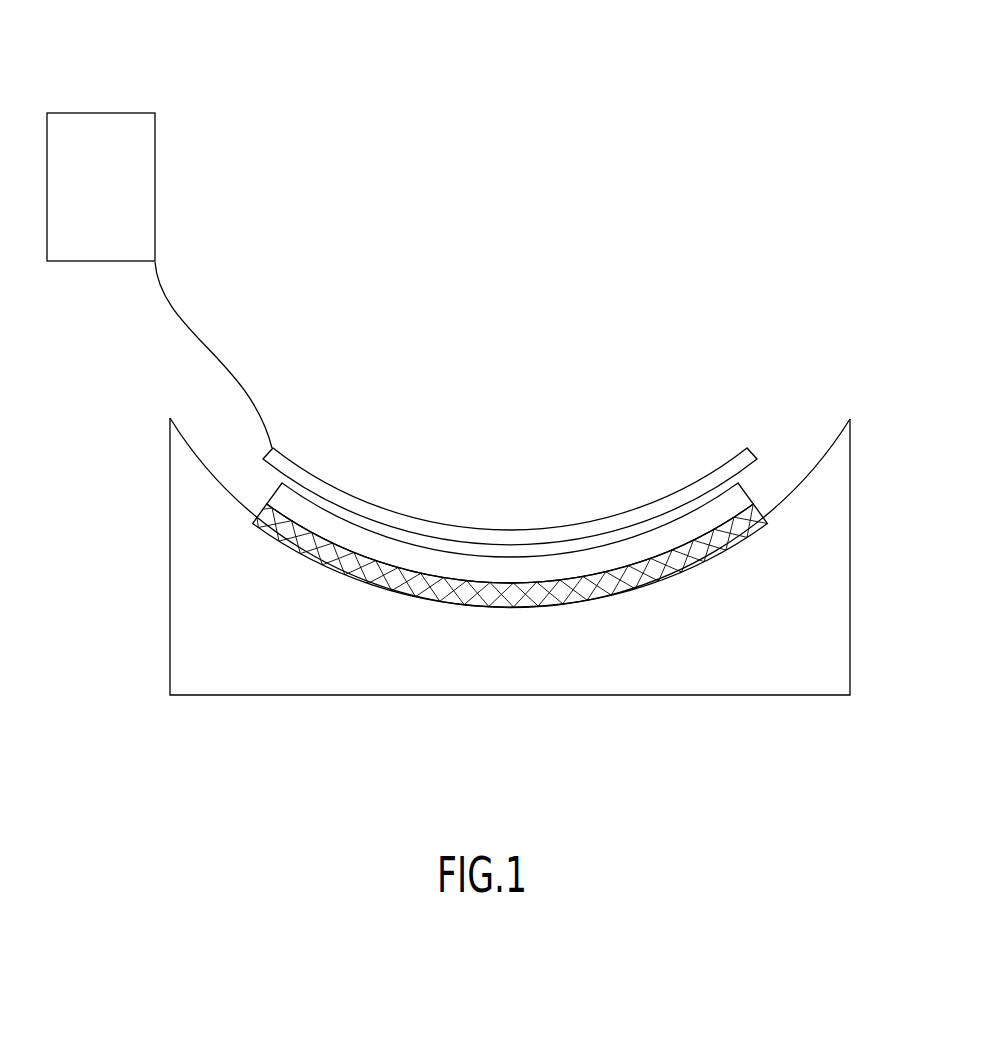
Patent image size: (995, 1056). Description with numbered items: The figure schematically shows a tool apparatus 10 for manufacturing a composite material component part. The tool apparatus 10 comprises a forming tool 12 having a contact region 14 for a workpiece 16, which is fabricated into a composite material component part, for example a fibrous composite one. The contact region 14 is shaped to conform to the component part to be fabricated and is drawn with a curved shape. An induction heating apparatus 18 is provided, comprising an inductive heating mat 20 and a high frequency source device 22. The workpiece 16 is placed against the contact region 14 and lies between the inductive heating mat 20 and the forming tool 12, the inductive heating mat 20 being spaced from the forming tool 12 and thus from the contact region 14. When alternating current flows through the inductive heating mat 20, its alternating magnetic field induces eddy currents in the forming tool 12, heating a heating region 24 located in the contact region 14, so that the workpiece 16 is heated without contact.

The tool apparatus 10 is at (397, 712).
The forming tool 12 is at (740, 672).
The contact region 14 is at (792, 483).
The workpiece 16 is at (552, 562).
The induction heating apparatus 18 is at (222, 240).
The inductive heating mat 20 is at (425, 527).
The high frequency source device 22 is at (80, 128).
The heating region 24 is at (475, 595).